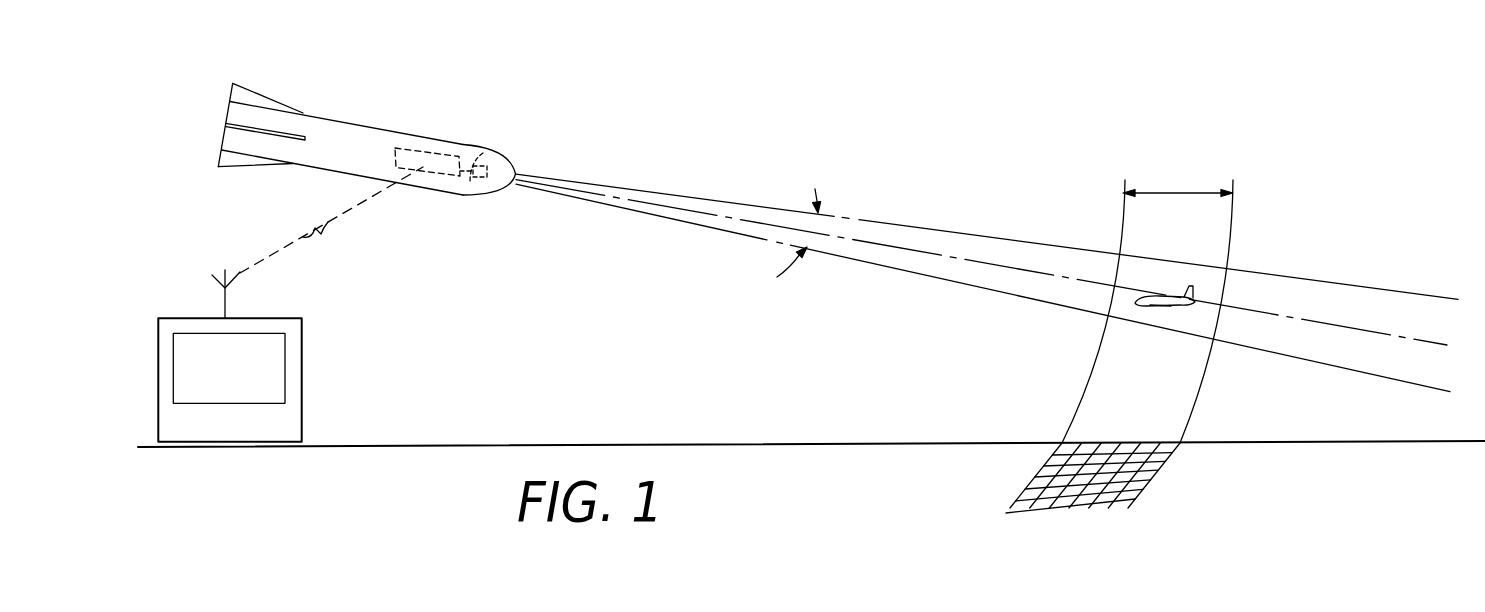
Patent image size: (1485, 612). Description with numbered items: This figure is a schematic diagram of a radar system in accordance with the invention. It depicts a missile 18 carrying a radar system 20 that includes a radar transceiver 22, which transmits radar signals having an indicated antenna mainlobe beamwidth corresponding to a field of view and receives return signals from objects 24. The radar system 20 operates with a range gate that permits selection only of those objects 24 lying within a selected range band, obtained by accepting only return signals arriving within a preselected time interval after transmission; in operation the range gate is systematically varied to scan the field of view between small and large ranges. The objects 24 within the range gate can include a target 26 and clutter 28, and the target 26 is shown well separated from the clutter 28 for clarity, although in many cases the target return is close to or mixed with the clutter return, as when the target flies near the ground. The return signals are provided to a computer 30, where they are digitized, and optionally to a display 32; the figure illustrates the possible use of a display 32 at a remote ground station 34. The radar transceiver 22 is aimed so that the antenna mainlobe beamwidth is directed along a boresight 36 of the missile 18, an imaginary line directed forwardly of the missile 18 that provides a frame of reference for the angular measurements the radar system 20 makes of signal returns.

The missile 18 is at (358, 124).
The radar system 20 is at (449, 123).
The radar transceiver 22 is at (470, 182).
The objects 24 is at (1003, 371).
The target 26 is at (1157, 310).
The clutter 28 is at (1030, 493).
The computer 30 is at (441, 176).
The display 32 is at (302, 352).
The remote ground station 34 is at (292, 448).
The boresight 36 is at (1260, 315).